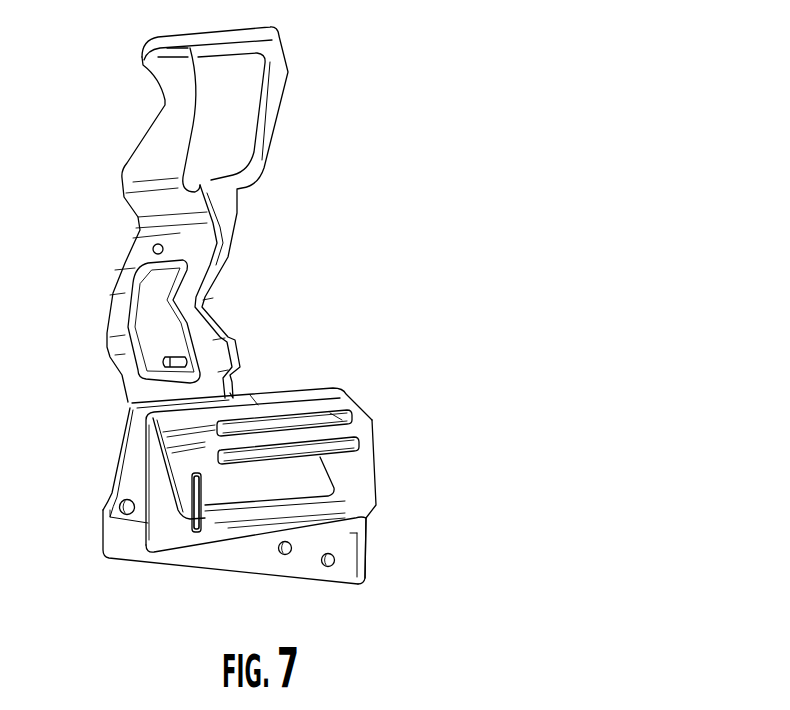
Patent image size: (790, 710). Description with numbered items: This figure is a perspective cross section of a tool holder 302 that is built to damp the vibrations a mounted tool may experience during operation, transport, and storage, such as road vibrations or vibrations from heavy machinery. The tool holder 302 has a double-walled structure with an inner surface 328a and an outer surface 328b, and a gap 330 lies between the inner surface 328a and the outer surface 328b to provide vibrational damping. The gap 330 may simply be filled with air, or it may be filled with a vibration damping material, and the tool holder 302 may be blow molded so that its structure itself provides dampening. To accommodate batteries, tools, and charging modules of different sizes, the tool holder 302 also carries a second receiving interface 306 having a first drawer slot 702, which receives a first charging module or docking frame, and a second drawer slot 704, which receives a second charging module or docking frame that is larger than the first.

The tool holder 302 is at (255, 334).
The second receiving interface 306 is at (197, 214).
The second drawer slot 704 is at (355, 408).
The first drawer slot 702 is at (370, 434).
The gap 330 is at (370, 479).
The outer surface 328b is at (370, 567).
The inner surface 328a is at (338, 583).